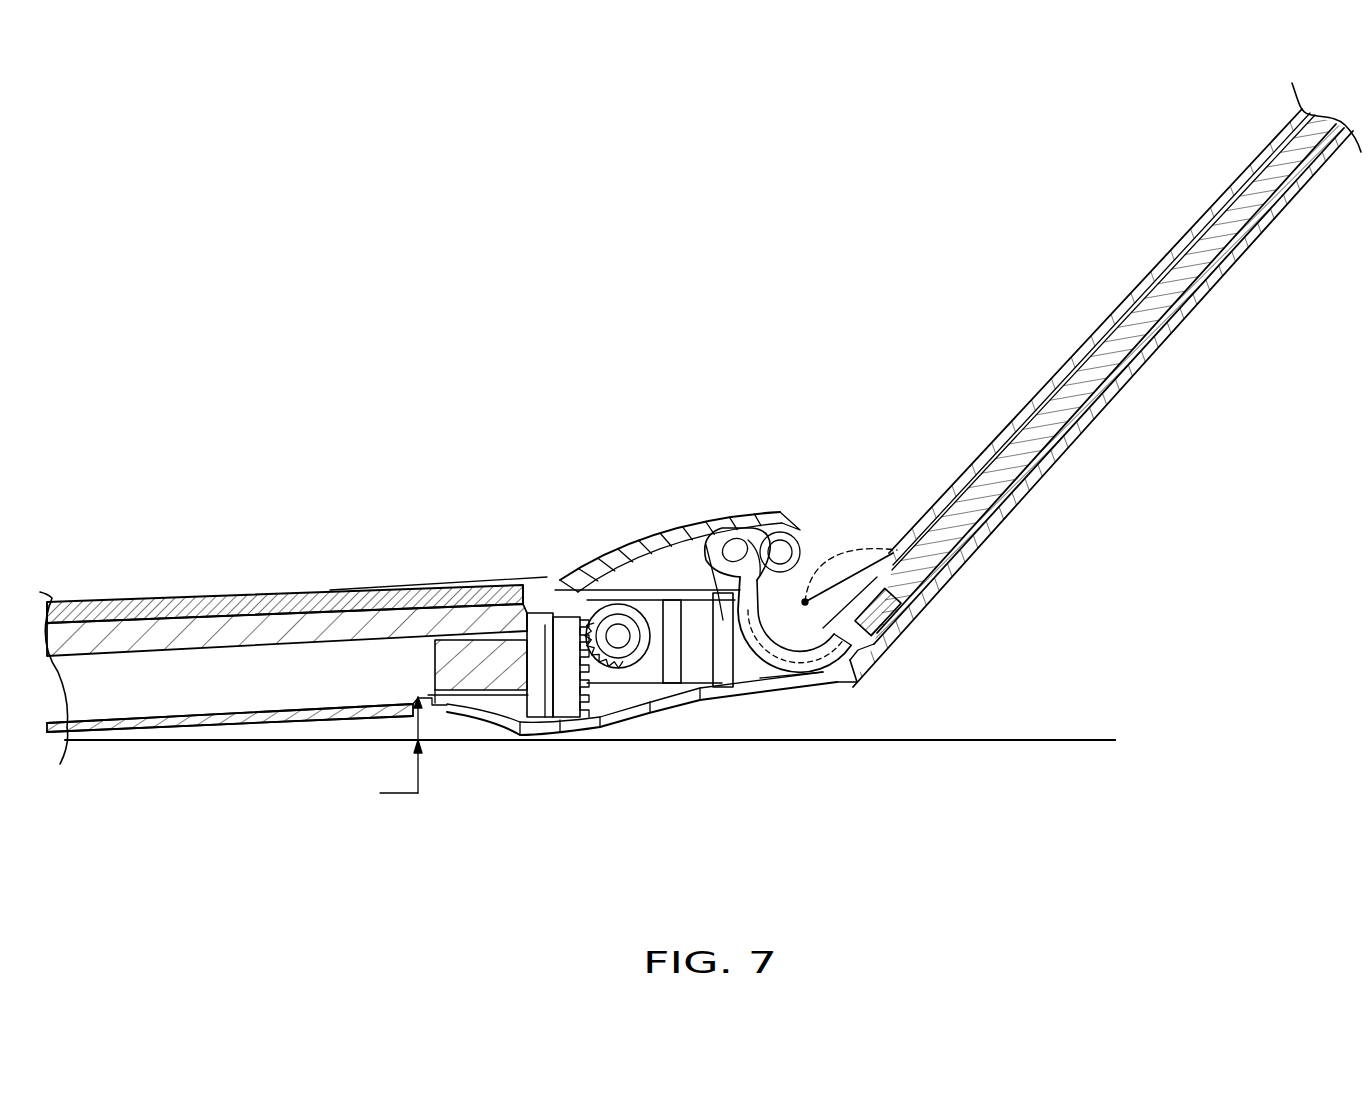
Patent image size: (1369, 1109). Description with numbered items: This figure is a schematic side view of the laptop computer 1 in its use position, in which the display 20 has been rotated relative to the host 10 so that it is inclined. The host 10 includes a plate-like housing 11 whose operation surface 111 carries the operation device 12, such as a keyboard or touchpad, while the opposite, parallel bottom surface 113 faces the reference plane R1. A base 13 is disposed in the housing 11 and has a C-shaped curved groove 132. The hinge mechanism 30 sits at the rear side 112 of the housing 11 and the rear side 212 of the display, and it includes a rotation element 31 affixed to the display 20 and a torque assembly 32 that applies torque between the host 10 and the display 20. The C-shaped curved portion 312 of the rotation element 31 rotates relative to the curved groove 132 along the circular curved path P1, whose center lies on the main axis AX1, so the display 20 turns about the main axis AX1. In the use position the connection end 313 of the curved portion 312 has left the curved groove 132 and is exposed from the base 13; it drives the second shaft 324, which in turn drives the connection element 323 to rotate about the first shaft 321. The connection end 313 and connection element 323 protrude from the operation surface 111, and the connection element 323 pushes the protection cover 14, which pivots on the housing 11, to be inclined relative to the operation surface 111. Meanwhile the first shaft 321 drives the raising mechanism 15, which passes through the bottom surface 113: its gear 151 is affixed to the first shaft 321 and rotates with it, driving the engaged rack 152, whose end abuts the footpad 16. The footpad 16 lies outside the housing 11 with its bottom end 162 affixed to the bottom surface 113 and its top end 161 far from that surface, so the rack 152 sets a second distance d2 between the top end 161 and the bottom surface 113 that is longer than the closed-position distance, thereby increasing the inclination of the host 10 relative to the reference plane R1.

The laptop computer 1 is at (57, 104).
The host 10 is at (178, 738).
The housing 11 is at (223, 727).
The operation surface 111 is at (294, 610).
The rear side 112 is at (868, 695).
The bottom surface 113 is at (288, 727).
The operation device 12 is at (240, 600).
The base 13 is at (735, 690).
The curved groove 132 is at (815, 695).
The protection cover 14 is at (590, 572).
The raising mechanism 15 is at (682, 840).
The gear 151 is at (638, 710).
The rack 152 is at (575, 707).
The footpad 16 is at (511, 748).
The top end 161 is at (557, 743).
The bottom end 162 is at (460, 713).
The display 20 is at (1219, 147).
The rear side 212 is at (973, 658).
The hinge mechanism 30 is at (867, 498).
The rotation element 31 is at (951, 594).
The curved portion 312 is at (925, 590).
The connection end 313 is at (815, 535).
The torque assembly 32 is at (767, 431).
The first shaft 321 is at (628, 535).
The connection element 323 is at (715, 530).
The second shaft 324 is at (790, 515).
The main axis AX1 is at (905, 552).
The curved path P1 is at (845, 535).
The reference plane R1 is at (1090, 740).
The second distance d2 is at (401, 746).